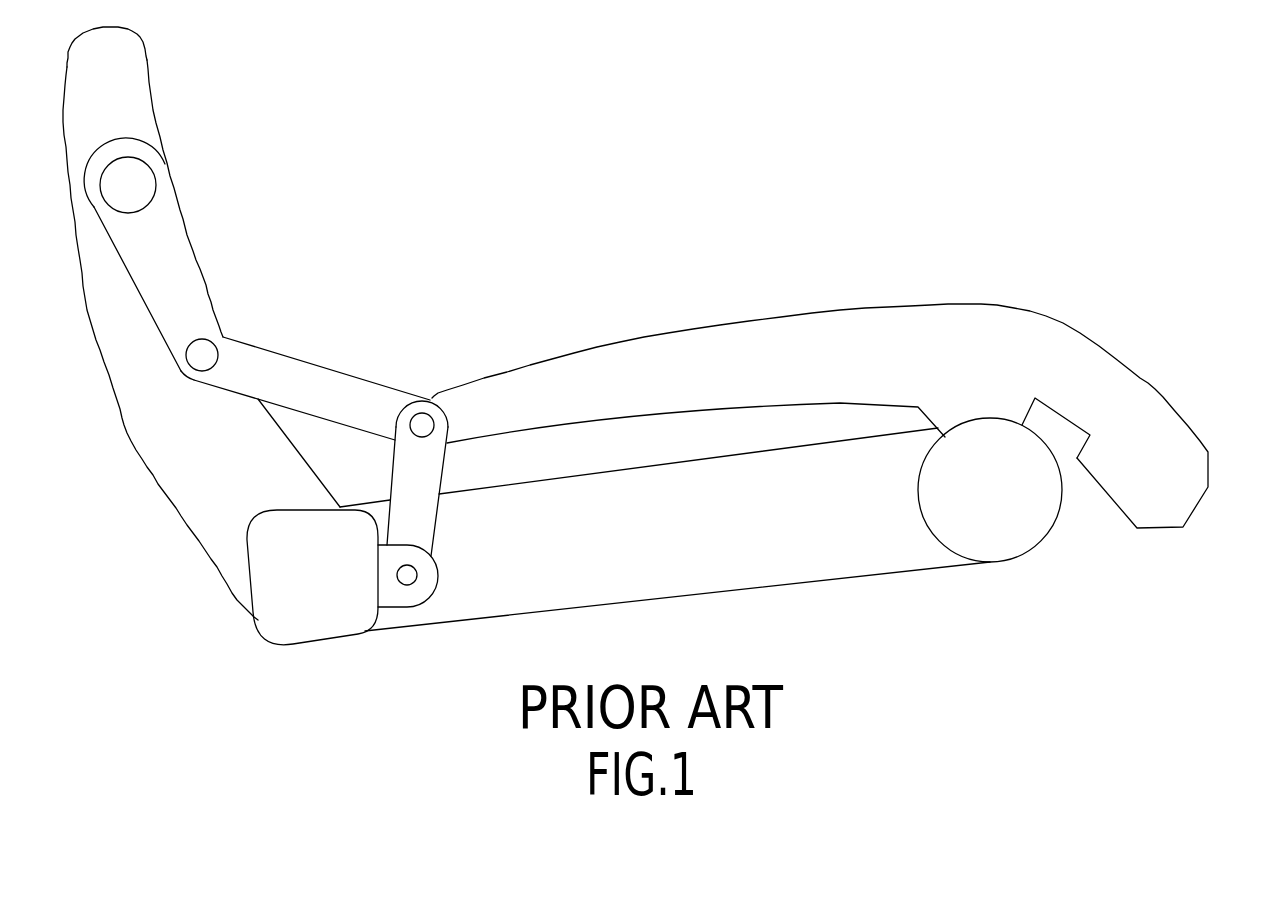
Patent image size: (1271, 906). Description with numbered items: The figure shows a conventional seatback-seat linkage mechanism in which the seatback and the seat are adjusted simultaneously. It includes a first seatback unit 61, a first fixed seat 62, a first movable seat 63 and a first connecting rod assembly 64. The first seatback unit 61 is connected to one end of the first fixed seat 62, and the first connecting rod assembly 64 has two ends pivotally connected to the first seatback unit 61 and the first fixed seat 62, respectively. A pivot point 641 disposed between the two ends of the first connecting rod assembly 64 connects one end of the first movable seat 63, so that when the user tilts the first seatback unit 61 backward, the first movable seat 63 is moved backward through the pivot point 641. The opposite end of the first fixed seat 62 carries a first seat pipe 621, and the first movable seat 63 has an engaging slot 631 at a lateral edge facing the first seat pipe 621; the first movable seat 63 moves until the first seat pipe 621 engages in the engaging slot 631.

The first seatback unit 61 is at (137, 95).
The first fixed seat 62 is at (523, 583).
The first seat pipe 621 is at (1000, 528).
The first movable seat 63 is at (945, 332).
The engaging slot 631 is at (1061, 450).
The first connecting rod assembly 64 is at (308, 377).
The pivot point 641 is at (422, 425).